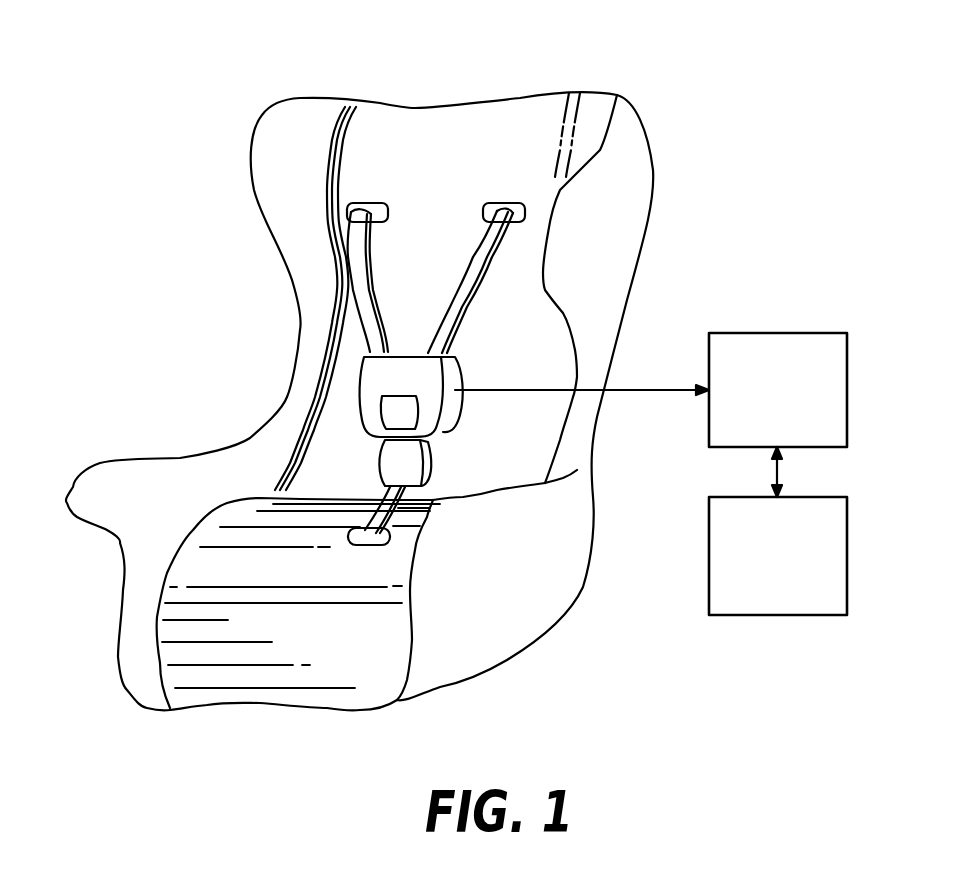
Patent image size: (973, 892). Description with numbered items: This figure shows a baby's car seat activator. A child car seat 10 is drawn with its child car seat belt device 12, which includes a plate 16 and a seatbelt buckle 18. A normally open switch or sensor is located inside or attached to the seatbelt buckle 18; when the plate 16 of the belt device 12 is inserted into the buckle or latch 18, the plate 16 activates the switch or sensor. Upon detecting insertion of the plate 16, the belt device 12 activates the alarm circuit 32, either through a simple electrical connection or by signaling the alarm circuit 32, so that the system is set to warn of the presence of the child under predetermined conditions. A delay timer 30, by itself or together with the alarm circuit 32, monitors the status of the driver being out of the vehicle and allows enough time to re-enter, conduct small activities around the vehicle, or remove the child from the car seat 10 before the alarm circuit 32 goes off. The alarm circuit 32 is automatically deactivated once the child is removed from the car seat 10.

The car seat 10 is at (430, 123).
The child car seat belt device 12 is at (360, 392).
The plate 16 is at (370, 446).
The seatbelt buckle 18 is at (450, 373).
The delay timer 30 is at (848, 553).
The alarm circuit 32 is at (848, 385).